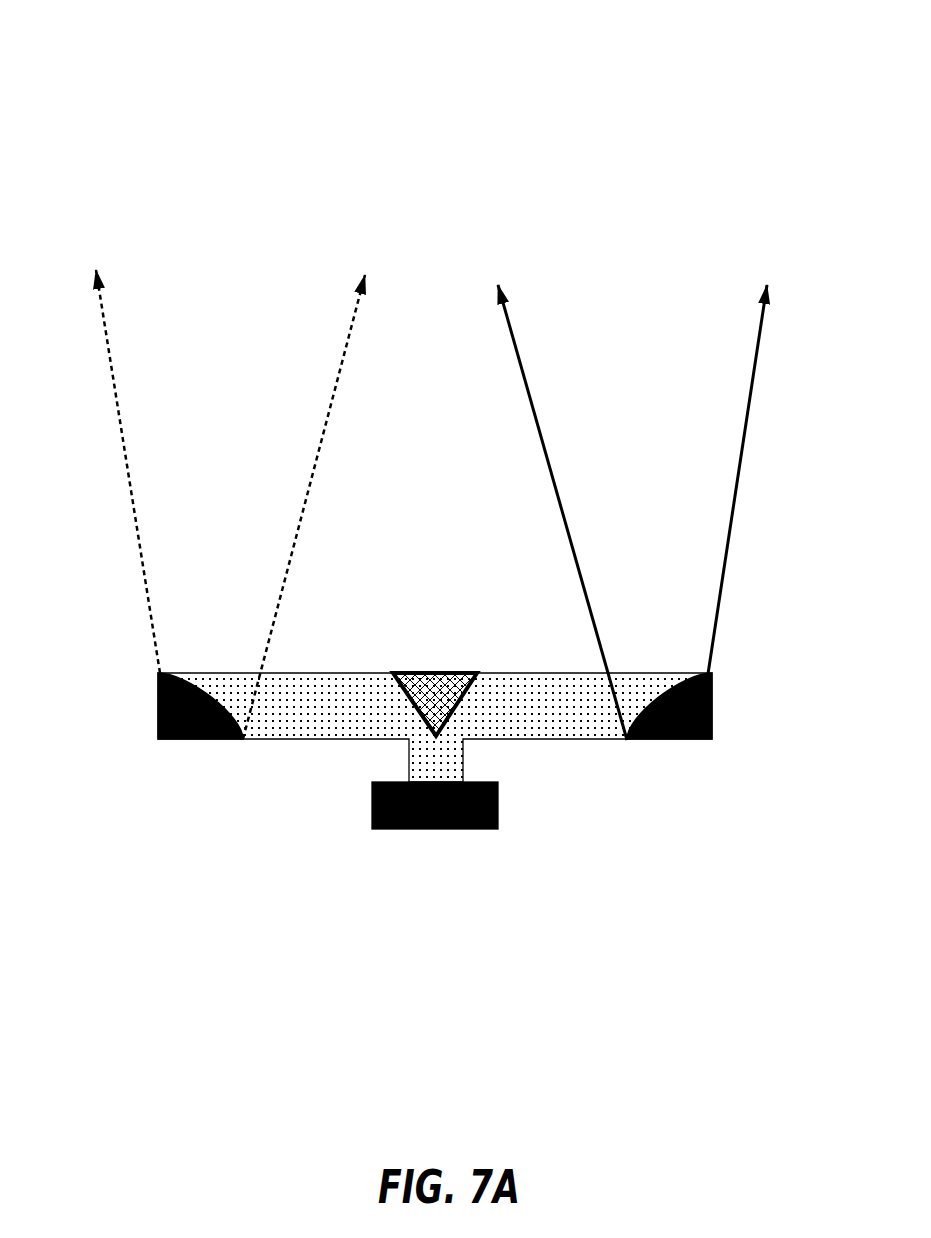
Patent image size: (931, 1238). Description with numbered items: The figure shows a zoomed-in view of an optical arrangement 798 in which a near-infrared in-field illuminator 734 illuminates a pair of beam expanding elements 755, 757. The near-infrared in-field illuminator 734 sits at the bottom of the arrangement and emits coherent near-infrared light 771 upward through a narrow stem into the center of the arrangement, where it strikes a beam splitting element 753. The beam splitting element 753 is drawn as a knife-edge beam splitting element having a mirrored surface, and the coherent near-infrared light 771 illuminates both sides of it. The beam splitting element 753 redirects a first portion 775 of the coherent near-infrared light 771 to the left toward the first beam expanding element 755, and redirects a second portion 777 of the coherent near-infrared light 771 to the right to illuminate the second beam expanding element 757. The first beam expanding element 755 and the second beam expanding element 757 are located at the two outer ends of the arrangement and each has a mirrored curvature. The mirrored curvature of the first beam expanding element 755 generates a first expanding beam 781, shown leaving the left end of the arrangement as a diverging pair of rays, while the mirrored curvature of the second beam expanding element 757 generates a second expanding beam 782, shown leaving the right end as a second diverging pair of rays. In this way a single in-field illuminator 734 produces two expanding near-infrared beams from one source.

The optical arrangement 798 is at (792, 39).
The first expanding beam 781 is at (112, 358).
The second expanding beam 782 is at (525, 358).
The beam splitting element 753 is at (440, 677).
The first beam expanding element 755 is at (158, 720).
The second beam expanding element 757 is at (712, 719).
The first portion of the coherent near-infrared light 775 is at (309, 719).
The second portion of the coherent near-infrared light 777 is at (542, 717).
The coherent near-infrared light 771 is at (419, 764).
The near-infrared in-field illuminator 734 is at (372, 816).